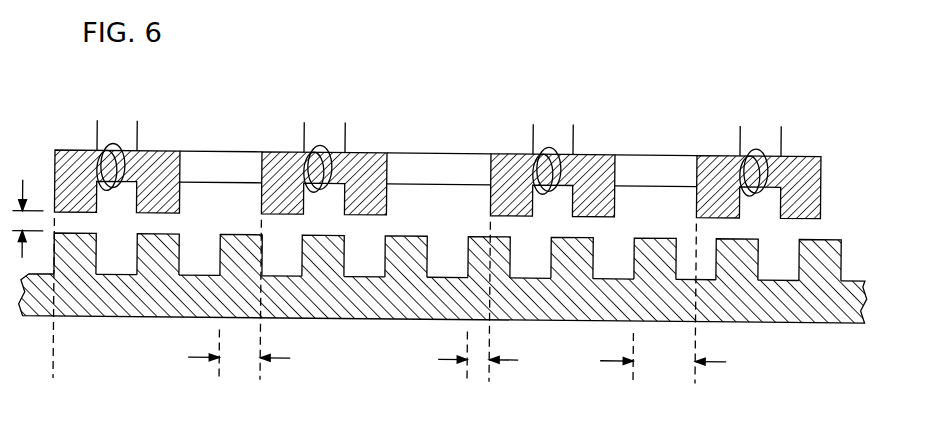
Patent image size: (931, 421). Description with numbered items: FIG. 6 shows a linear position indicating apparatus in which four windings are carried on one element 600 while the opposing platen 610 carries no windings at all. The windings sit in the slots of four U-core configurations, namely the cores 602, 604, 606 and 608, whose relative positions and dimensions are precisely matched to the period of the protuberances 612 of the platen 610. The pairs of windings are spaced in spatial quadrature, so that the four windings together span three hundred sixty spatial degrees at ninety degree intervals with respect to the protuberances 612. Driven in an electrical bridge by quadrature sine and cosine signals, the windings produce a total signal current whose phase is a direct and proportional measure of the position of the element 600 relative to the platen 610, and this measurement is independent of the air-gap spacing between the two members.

The element carrying the windings 600 is at (678, 132).
The core 602 is at (167, 150).
The core 604 is at (372, 150).
The core 606 is at (600, 150).
The core 608 is at (805, 150).
The platen 610 is at (448, 295).
The protuberances 612 is at (825, 233).